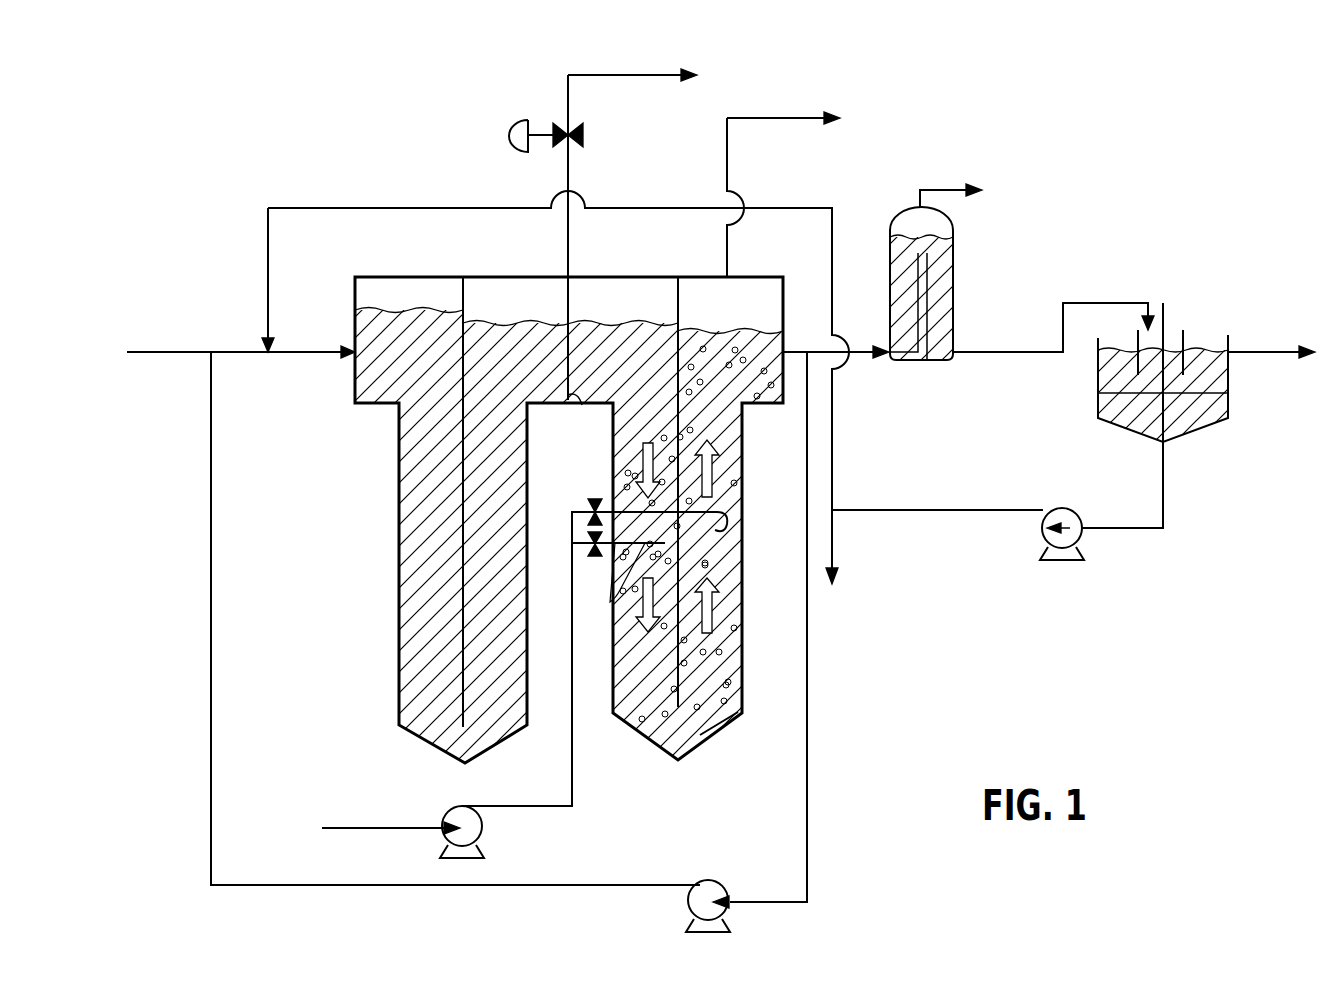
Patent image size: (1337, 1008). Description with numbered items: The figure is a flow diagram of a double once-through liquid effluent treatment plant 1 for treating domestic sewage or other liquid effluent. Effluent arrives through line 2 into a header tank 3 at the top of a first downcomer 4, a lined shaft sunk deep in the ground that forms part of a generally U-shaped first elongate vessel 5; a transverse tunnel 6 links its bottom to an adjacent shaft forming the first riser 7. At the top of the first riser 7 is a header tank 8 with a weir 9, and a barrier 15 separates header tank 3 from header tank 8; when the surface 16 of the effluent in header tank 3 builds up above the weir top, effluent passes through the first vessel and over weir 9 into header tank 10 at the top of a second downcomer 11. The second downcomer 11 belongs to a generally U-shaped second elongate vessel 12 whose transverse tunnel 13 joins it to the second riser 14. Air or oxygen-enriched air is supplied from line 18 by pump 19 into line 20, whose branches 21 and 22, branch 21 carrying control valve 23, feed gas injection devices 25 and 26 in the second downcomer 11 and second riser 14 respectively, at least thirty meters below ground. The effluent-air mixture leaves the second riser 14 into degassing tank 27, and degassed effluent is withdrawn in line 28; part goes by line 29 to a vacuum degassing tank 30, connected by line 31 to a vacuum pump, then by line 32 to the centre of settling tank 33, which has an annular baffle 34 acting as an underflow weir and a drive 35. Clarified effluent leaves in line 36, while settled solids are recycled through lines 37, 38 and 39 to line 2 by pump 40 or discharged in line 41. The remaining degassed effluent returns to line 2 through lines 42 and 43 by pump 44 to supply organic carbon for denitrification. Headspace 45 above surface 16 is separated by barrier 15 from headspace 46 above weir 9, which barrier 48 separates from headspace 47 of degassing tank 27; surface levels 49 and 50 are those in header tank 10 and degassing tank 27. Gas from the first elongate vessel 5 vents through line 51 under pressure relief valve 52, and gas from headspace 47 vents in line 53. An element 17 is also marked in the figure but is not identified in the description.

The liquid effluent treatment plant 1 is at (366, 178).
The line 2 is at (168, 351).
The header tank 3 is at (356, 370).
The first downcomer 4 is at (412, 498).
The first elongate vessel 5 is at (400, 620).
The transverse tunnel 6 is at (440, 744).
The first riser 7 is at (526, 457).
The header tank 8 is at (484, 328).
The weir 9 is at (572, 403).
The header tank 10 is at (578, 319).
The second downcomer 11 is at (598, 502).
The second elongate vessel 12 is at (742, 627).
The transverse tunnel 13 is at (698, 751).
The second riser 14 is at (740, 559).
The barrier 15 is at (460, 398).
The surface 16 is at (392, 303).
The gas discharge pipe 17 is at (561, 319).
The line 18 is at (341, 828).
The pump 19 is at (447, 810).
The line 20 is at (572, 790).
The branch 21 is at (574, 557).
The branch 22 is at (630, 510).
The control valve 23 is at (598, 558).
The gas injection device 25 is at (626, 612).
The gas injection device 26 is at (736, 511).
The degassing tank 27 is at (783, 297).
The line 28 is at (804, 351).
The line 29 is at (858, 360).
The vacuum degassing tank 30 is at (954, 288).
The line 31 is at (947, 185).
The line 32 is at (975, 357).
The settling tank 33 is at (1098, 388).
The annular baffle 34 is at (1185, 333).
The drive 35 is at (1170, 303).
The line 36 is at (1271, 349).
The line 37 is at (1168, 502).
The line 38 is at (939, 508).
The line 39 is at (793, 206).
The pump 40 is at (1062, 509).
The line 41 is at (834, 550).
The line 42 is at (810, 703).
The line 43 is at (541, 889).
The pump 44 is at (690, 908).
The headspace 45 is at (440, 290).
The headspace 46 is at (510, 290).
The headspace 47 is at (754, 291).
The barrier 48 is at (678, 312).
The surface level 49 is at (613, 344).
The surface level 50 is at (721, 344).
The line 51 is at (640, 74).
The pressure relief valve 52 is at (554, 130).
The line 53 is at (784, 117).